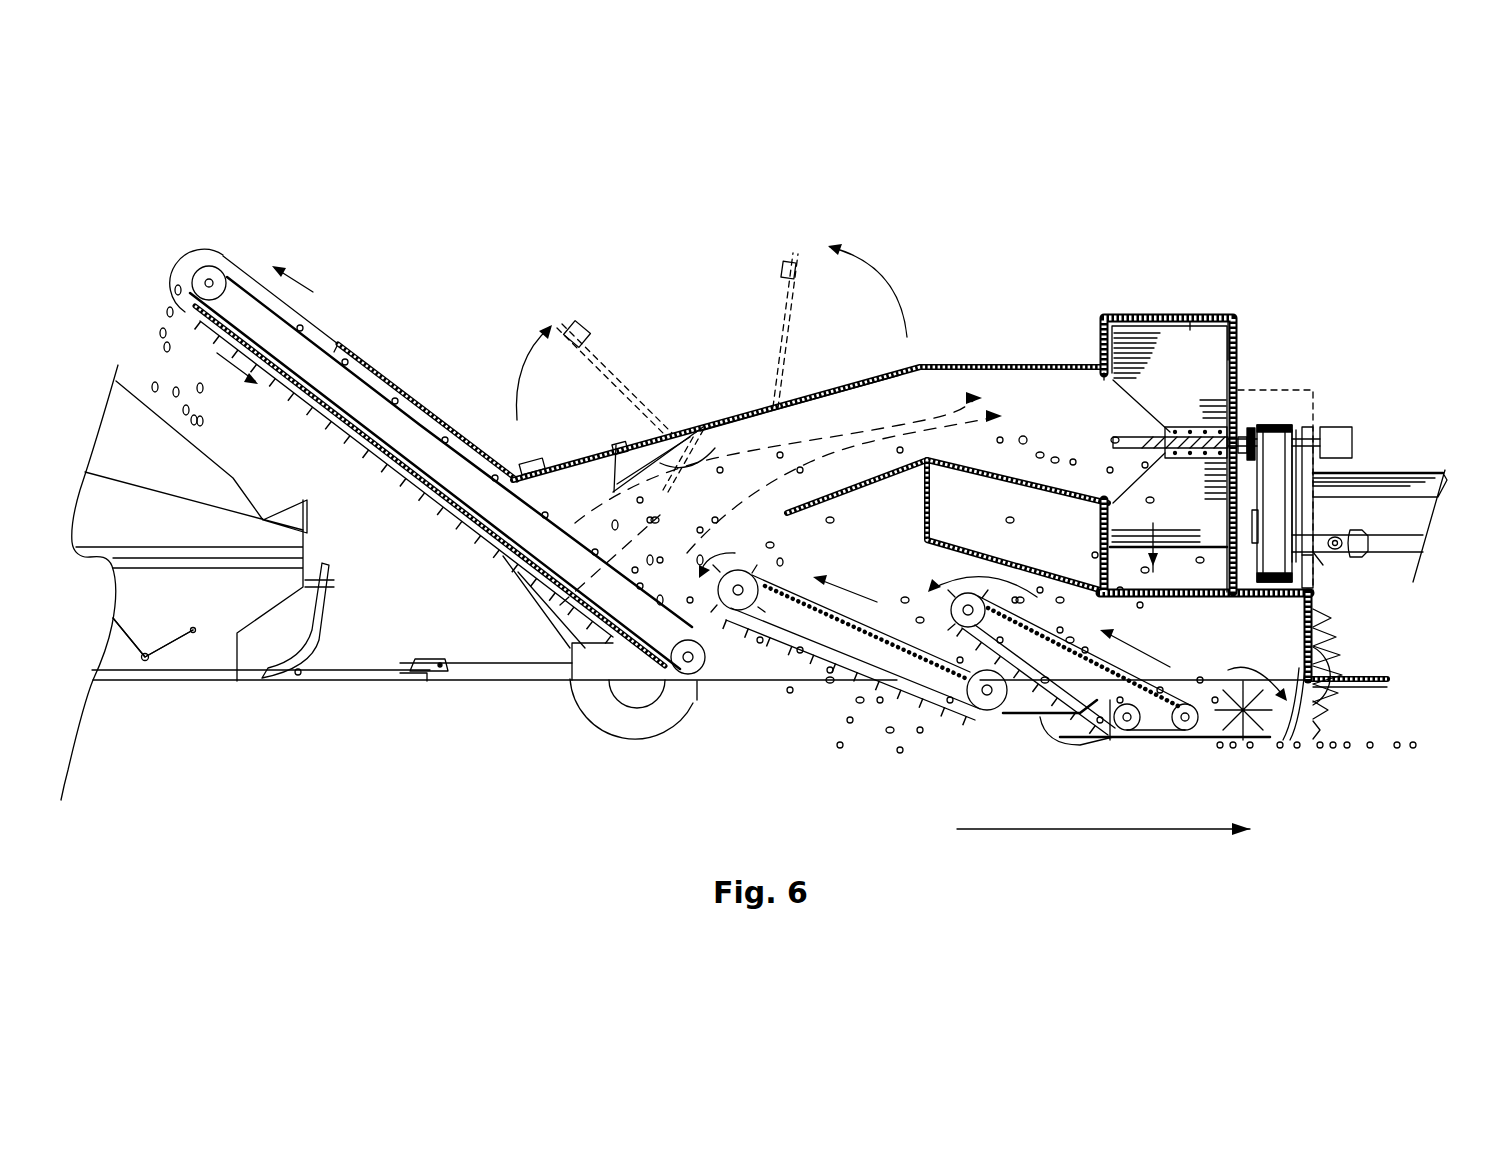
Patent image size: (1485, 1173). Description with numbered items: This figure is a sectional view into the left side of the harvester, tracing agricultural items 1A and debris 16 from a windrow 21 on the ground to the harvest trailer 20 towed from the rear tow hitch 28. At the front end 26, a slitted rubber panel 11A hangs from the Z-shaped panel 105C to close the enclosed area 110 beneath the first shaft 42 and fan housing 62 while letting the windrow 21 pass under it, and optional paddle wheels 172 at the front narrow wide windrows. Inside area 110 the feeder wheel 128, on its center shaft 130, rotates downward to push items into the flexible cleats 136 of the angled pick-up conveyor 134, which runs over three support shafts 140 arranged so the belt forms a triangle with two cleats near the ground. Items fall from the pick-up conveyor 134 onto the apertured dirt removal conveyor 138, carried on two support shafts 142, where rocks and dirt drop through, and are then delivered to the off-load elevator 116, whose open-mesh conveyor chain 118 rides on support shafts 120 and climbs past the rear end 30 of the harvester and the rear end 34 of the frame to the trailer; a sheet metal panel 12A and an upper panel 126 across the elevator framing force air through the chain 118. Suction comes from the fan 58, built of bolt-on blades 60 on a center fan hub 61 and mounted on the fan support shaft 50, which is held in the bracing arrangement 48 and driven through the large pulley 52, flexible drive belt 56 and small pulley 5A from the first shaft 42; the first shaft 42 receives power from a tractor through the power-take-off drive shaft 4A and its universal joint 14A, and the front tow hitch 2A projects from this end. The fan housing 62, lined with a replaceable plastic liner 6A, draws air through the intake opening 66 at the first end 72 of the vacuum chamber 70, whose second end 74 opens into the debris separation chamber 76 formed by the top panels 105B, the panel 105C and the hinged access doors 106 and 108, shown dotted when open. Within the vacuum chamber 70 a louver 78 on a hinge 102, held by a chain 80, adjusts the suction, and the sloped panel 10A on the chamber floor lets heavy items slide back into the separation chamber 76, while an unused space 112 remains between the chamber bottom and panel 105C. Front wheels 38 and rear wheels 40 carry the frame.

The agricultural items 1A is at (204, 421).
The front tow hitch 2A is at (1390, 473).
The power-take-off drive shaft 4A is at (1390, 545).
The small pulley 5A is at (1296, 436).
The plastic liner 6A is at (1193, 323).
The sloped panel 10A is at (870, 480).
The rubber panel 11A is at (1295, 742).
The sheet metal panel 12A is at (338, 432).
The universal joint 14A is at (1340, 437).
The debris 16 is at (1073, 459).
The harvest trailer 20 is at (232, 655).
The windrows 21 is at (1380, 744).
The front end of harvester 26 is at (1312, 368).
The rear tow hitch 28 is at (468, 669).
The rear end of harvester 30 is at (505, 579).
The rear end of frame 34 is at (588, 660).
The front wheels 38 is at (1050, 730).
The rear wheels 40 is at (600, 745).
The first shaft 42 is at (1335, 571).
The bracing arrangement 48 is at (1302, 503).
The fan support shaft 50 is at (1297, 440).
The large pulley 52 is at (1232, 597).
The flexible drive belt 56 is at (1268, 424).
The fan 58 is at (1180, 337).
The bolt-on blades 60 is at (1145, 370).
The center fan hub 61 is at (1198, 425).
The fan housing 62 is at (1230, 320).
The air and debris intake opening 66 is at (1117, 413).
The vacuum chamber 70 is at (997, 397).
The first end of vacuum chamber 72 is at (1100, 373).
The second end of vacuum chamber 74 is at (930, 417).
The debris separation chamber 76 is at (583, 507).
The louver 78 is at (714, 447).
The chain 80 is at (620, 490).
The hinge 102 is at (698, 437).
The top panels 105B is at (727, 423).
The Z-shaped panel 105C is at (1033, 553).
The access door 106 is at (795, 263).
The access door 108 is at (598, 360).
The enclosed area 110 is at (1280, 612).
The open passage 112 is at (1000, 519).
The off-load elevator 116 is at (318, 323).
The conveyor chain 118 is at (330, 347).
The support shafts 120 is at (207, 280).
The upper panel 126 is at (385, 377).
The feeder wheel 128 is at (1233, 740).
The center shaft 130 is at (1262, 735).
The pick-up conveyor 134 is at (1083, 745).
The flexible cleats 136 is at (1180, 732).
The dirt removal conveyor 138 is at (782, 630).
The support shafts 140 is at (1125, 732).
The support shafts 142 is at (735, 603).
The paddle wheels 172 is at (1323, 665).